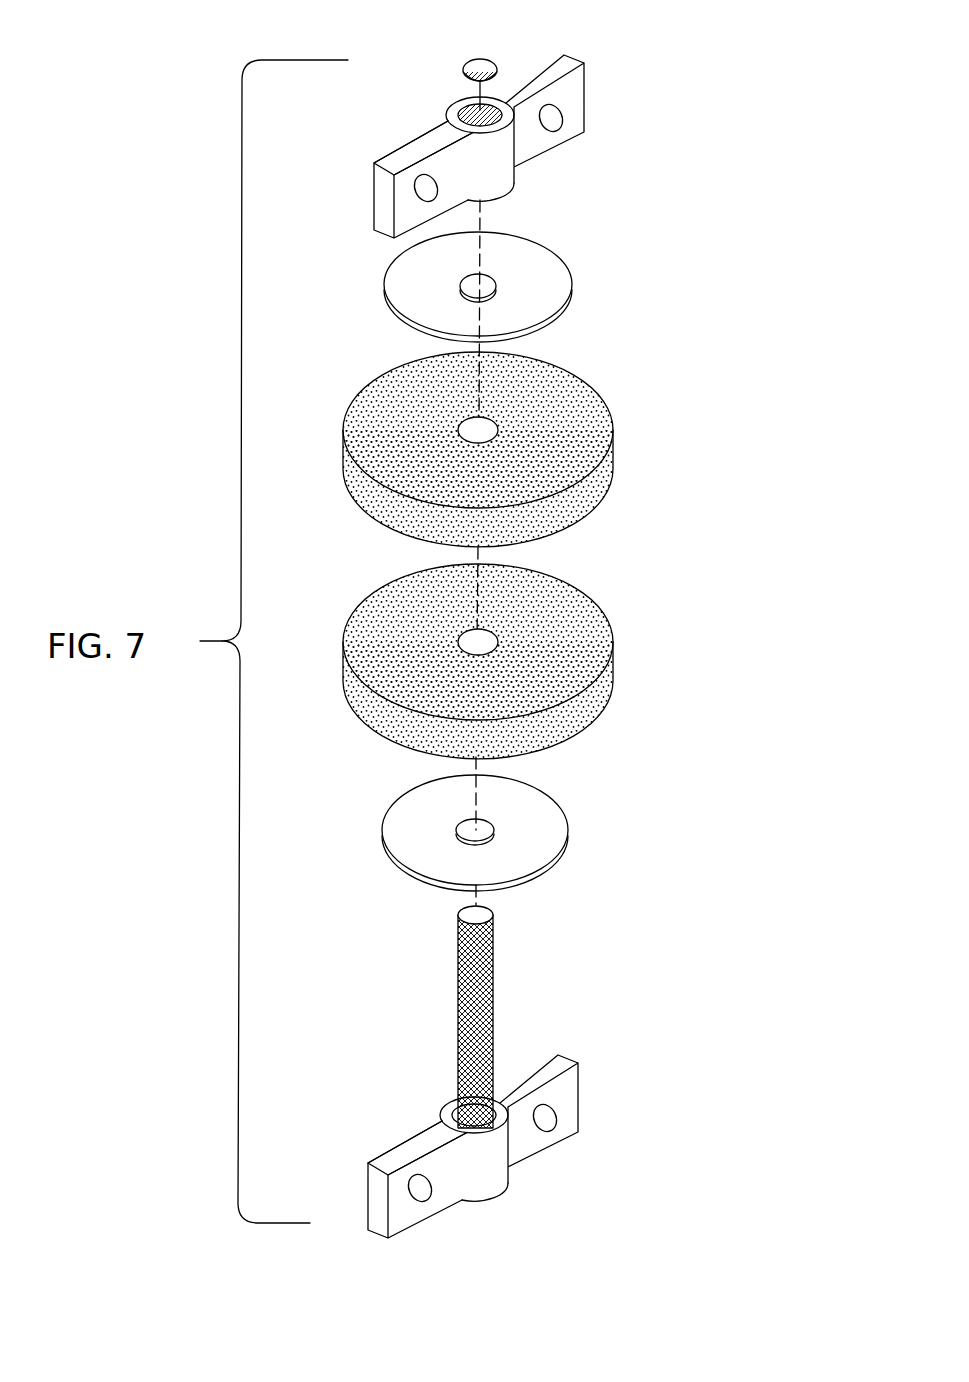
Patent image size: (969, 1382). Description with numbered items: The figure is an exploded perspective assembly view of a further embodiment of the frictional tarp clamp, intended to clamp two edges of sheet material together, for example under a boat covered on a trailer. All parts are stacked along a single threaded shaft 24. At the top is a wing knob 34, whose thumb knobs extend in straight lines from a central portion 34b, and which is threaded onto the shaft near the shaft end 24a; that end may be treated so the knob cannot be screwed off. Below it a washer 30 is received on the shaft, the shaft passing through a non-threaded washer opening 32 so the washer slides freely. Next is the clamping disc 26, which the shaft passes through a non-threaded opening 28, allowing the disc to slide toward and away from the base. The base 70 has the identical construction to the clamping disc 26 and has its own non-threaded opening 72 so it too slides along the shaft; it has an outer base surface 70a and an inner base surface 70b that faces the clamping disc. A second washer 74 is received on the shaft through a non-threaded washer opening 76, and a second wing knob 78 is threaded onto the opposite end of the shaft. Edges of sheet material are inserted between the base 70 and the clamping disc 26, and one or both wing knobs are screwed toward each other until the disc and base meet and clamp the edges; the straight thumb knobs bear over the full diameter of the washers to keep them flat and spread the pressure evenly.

The threaded shaft 24 is at (538, 1011).
The shaft end 24a is at (493, 922).
The clamping disc 26 is at (527, 425).
The non-threaded opening 28 is at (483, 433).
The washer 30 is at (514, 258).
The non-threaded washer opening 32 is at (490, 280).
The wing knob 34 is at (495, 121).
The central portion 34b is at (448, 107).
The base 70 is at (532, 650).
The outer base surface 70a is at (572, 738).
The inner base surface 70b is at (583, 627).
The non-threaded opening 72 is at (493, 637).
The washer 74 is at (533, 833).
The non-threaded washer opening 76 is at (490, 823).
The wing knob 78 is at (510, 1118).